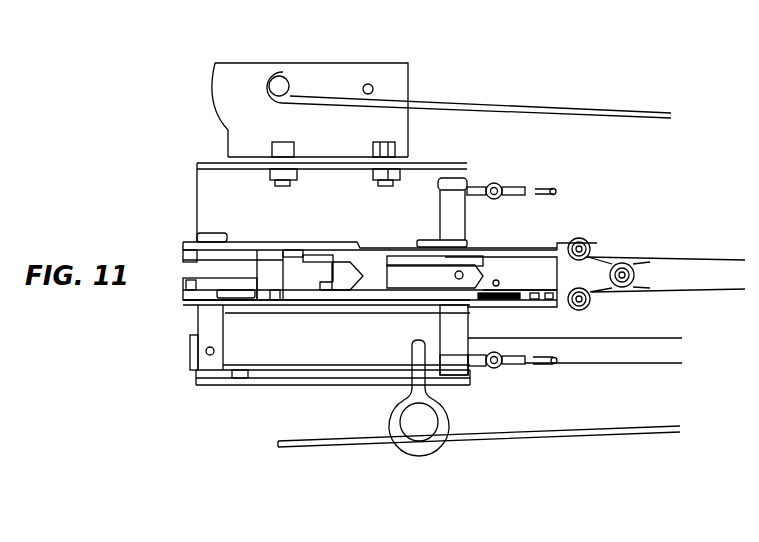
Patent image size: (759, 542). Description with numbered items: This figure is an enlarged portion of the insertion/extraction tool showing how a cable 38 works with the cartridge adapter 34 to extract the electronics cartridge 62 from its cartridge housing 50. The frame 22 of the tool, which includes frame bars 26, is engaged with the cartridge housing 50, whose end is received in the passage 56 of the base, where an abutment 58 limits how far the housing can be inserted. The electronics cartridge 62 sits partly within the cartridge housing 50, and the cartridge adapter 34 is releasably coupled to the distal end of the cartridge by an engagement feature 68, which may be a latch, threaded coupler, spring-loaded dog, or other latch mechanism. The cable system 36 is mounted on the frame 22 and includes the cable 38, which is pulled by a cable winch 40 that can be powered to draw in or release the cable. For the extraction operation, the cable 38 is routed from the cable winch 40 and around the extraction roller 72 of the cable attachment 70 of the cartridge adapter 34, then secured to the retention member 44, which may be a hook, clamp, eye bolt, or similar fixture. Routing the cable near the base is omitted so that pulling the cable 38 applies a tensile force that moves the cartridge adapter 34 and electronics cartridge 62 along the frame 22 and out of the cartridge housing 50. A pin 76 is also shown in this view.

The frame 22 is at (273, 192).
The frame bars 26 is at (627, 355).
The cartridge adapter 34 is at (497, 309).
The cable system 36 is at (665, 146).
The cable 38 is at (563, 110).
The cable winch 40 is at (261, 58).
The retention member 44 is at (410, 456).
The cartridge housing 50 is at (263, 242).
The passage 56 is at (242, 249).
The abutment 58 is at (417, 240).
The electronics cartridge 62 is at (180, 300).
The engagement feature 68 is at (350, 297).
The cable attachment 70 is at (628, 245).
The extraction roller 72 is at (585, 243).
The pin 76 is at (517, 187).